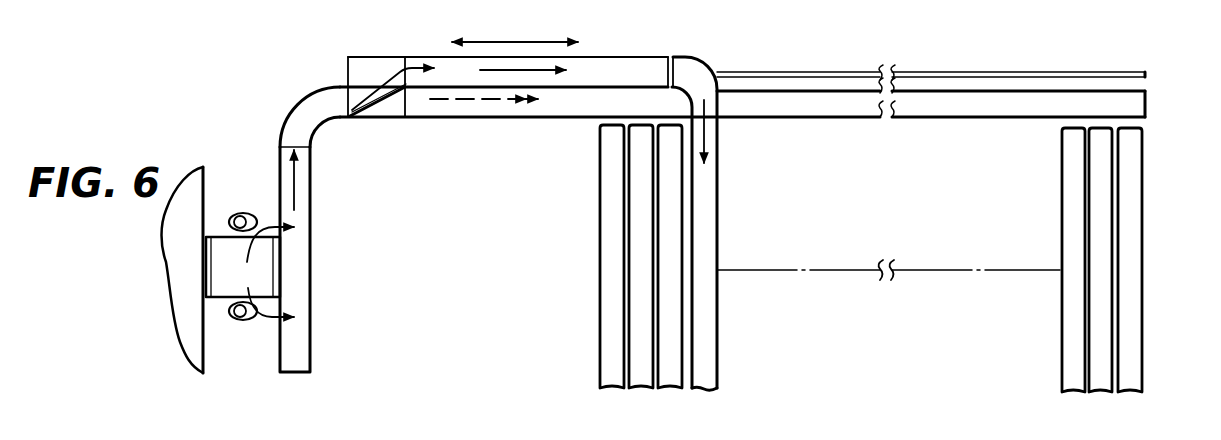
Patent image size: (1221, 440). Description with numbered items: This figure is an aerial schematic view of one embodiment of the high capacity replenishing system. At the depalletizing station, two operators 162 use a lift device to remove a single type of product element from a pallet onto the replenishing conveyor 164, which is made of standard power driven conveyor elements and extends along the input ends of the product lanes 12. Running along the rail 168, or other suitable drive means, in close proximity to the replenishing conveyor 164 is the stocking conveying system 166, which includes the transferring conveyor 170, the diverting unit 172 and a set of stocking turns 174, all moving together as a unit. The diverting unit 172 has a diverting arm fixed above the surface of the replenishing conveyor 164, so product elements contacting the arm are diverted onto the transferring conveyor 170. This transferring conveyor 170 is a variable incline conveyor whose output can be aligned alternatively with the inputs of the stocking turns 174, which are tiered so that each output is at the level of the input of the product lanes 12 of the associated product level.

The product lanes 12 is at (700, 190).
The operators 162 is at (240, 213).
The replenishing conveyor 164 is at (306, 281).
The stocking conveying system 166 is at (526, 32).
The rail 168 is at (925, 68).
The transferring conveyor 170 is at (647, 68).
The diverting unit 172 is at (356, 93).
The stocking turns 174 is at (692, 77).